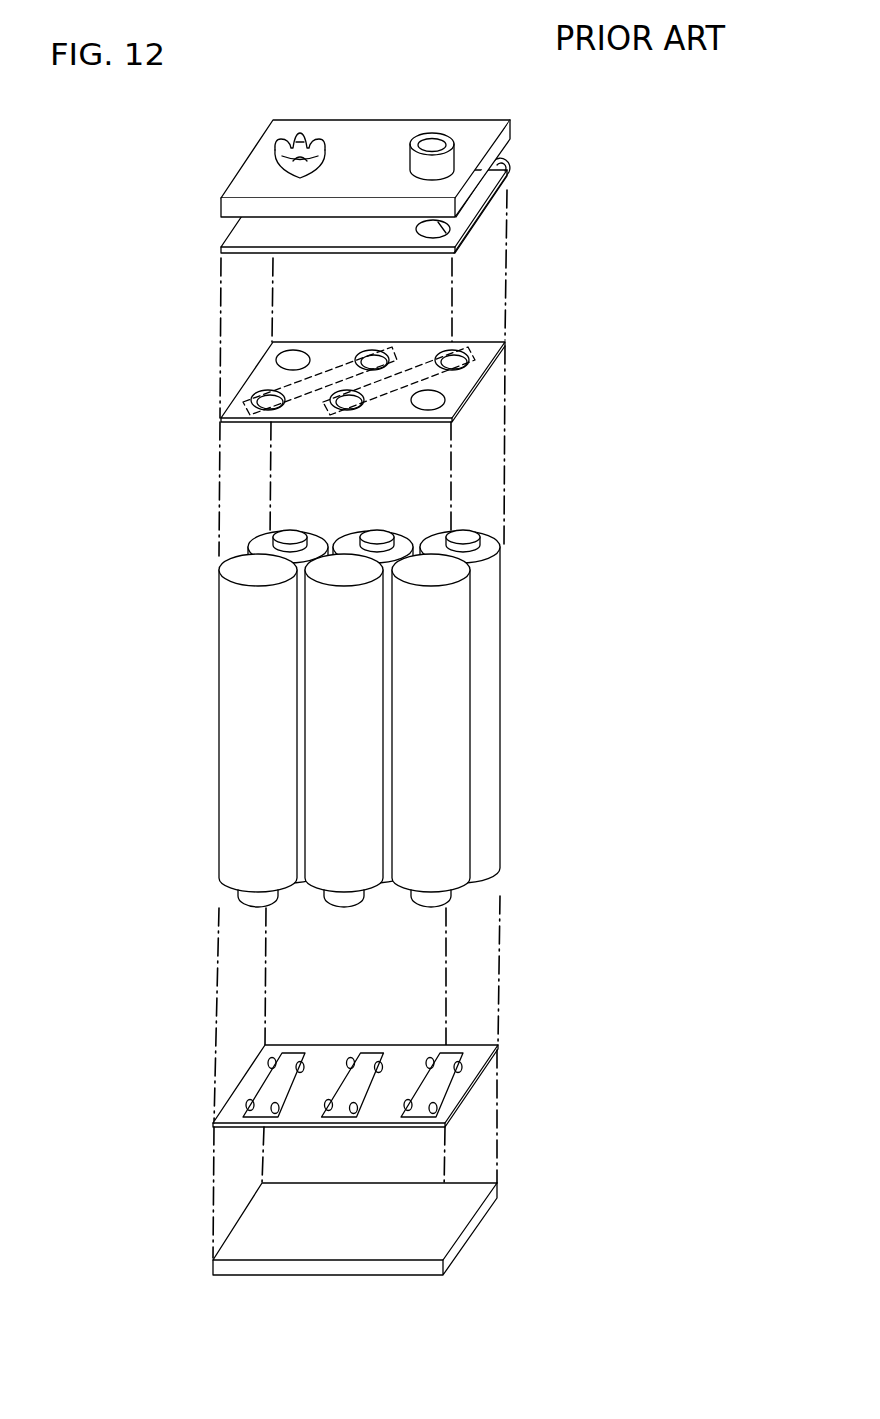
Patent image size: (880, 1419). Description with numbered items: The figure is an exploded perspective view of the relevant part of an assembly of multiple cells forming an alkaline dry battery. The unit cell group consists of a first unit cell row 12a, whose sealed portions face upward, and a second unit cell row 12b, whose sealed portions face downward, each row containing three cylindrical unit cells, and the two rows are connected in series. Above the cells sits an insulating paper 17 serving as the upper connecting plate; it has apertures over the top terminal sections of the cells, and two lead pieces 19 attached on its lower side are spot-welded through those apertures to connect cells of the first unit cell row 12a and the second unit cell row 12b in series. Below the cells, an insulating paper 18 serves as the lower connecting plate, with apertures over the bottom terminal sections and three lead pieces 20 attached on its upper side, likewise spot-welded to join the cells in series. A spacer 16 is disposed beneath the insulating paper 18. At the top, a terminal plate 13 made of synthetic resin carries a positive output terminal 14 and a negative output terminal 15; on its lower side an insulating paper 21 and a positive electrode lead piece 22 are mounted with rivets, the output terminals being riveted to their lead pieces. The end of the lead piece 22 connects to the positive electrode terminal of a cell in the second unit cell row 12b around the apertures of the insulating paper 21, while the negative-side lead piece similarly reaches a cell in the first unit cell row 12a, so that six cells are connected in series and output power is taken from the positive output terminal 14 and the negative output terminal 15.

The first unit cell row 12a is at (487, 652).
The second unit cell row 12b is at (247, 702).
The terminal plate 13 is at (366, 140).
The positive output terminal 14 is at (430, 143).
The negative output terminal 15 is at (302, 136).
The spacer 16 is at (285, 1227).
The insulating paper 17 is at (330, 355).
The insulating paper 18 is at (400, 1063).
The lead pieces 19 is at (267, 397).
The lead pieces 20 is at (263, 1100).
The insulating paper 21 is at (477, 200).
The positive electrode lead piece 22 is at (433, 233).